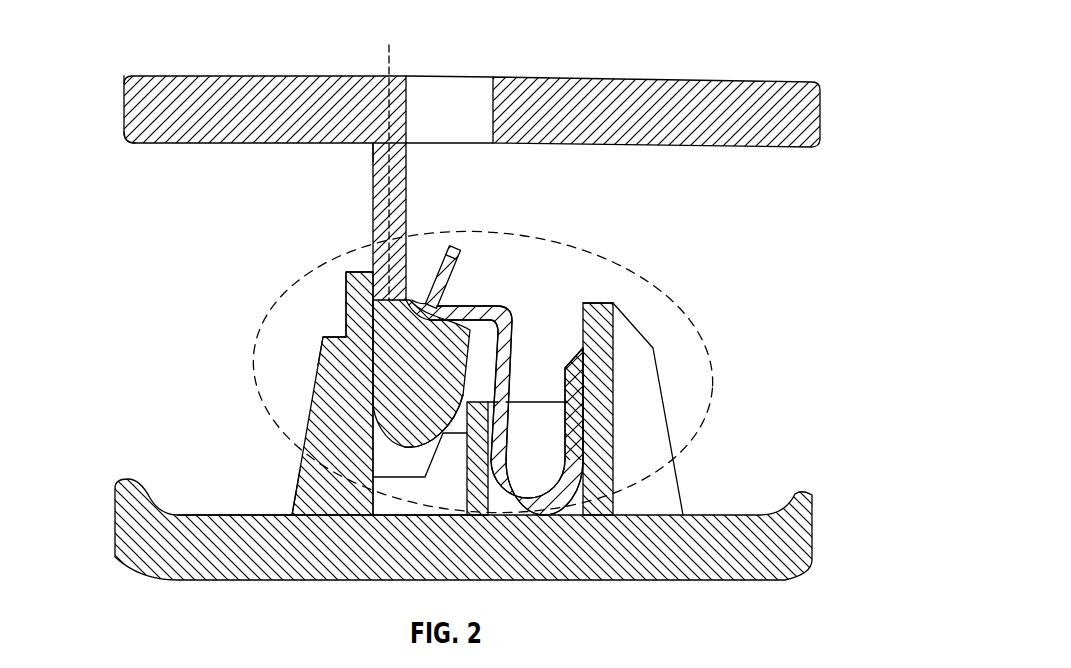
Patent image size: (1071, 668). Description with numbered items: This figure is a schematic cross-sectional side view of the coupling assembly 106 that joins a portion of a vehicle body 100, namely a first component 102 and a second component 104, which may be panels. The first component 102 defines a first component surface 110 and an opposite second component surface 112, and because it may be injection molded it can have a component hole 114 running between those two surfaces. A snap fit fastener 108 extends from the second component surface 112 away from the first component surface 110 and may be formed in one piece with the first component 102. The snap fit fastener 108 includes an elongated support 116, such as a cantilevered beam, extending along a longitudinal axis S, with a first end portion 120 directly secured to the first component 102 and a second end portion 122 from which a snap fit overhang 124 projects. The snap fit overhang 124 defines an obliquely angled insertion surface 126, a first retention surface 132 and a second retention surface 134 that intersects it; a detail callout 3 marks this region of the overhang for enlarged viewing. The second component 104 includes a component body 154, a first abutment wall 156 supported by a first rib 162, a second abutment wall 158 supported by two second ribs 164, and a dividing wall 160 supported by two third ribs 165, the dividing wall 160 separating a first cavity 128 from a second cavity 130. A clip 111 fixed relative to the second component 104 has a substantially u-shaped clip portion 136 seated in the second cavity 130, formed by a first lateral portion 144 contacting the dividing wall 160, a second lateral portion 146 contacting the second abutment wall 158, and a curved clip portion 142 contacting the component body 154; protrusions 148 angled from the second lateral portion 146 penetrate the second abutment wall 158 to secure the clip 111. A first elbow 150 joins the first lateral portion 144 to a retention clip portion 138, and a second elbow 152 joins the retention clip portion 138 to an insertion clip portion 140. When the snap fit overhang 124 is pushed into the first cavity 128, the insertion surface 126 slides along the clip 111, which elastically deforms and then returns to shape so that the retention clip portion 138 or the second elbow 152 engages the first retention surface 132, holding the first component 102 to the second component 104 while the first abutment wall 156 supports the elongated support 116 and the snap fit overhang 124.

The vehicle body 100 is at (169, 42).
The first component 102 is at (160, 78).
The second component 104 is at (735, 584).
The coupling assembly 106 is at (519, 211).
The snap fit fastener 108 is at (372, 180).
The first component surface 110 is at (768, 80).
The clip 111 is at (503, 310).
The second component surface 112 is at (150, 146).
The component hole 114 is at (480, 76).
The elongated support 116 is at (372, 152).
The first end portion 120 is at (400, 165).
The second end portion 122 is at (372, 290).
The snap fit overhang 124 is at (372, 430).
The insertion surface 126 is at (499, 392).
The first cavity 128 is at (380, 472).
The second cavity 130 is at (562, 490).
The first retention surface 132 is at (511, 352).
The second retention surface 134 is at (441, 283).
The substantially u-shaped clip portion 136 is at (524, 513).
The retention clip portion 138 is at (421, 373).
The insertion clip portion 140 is at (408, 292).
The curved clip portion 142 is at (551, 513).
The first lateral portion 144 is at (507, 448).
The second lateral portion 146 is at (572, 456).
The protrusion 148 is at (586, 348).
The first elbow 150 is at (511, 334).
The second elbow 152 is at (345, 352).
The component body 154 is at (237, 520).
The first abutment wall 156 is at (346, 282).
The second abutment wall 158 is at (600, 304).
The dividing wall 160 is at (468, 404).
The first rib 162 is at (297, 492).
The second rib 164 is at (646, 458).
The third rib 165 is at (407, 506).
The section line for FIG. 3 is at (718, 366).
The longitudinal axis S is at (386, 63).